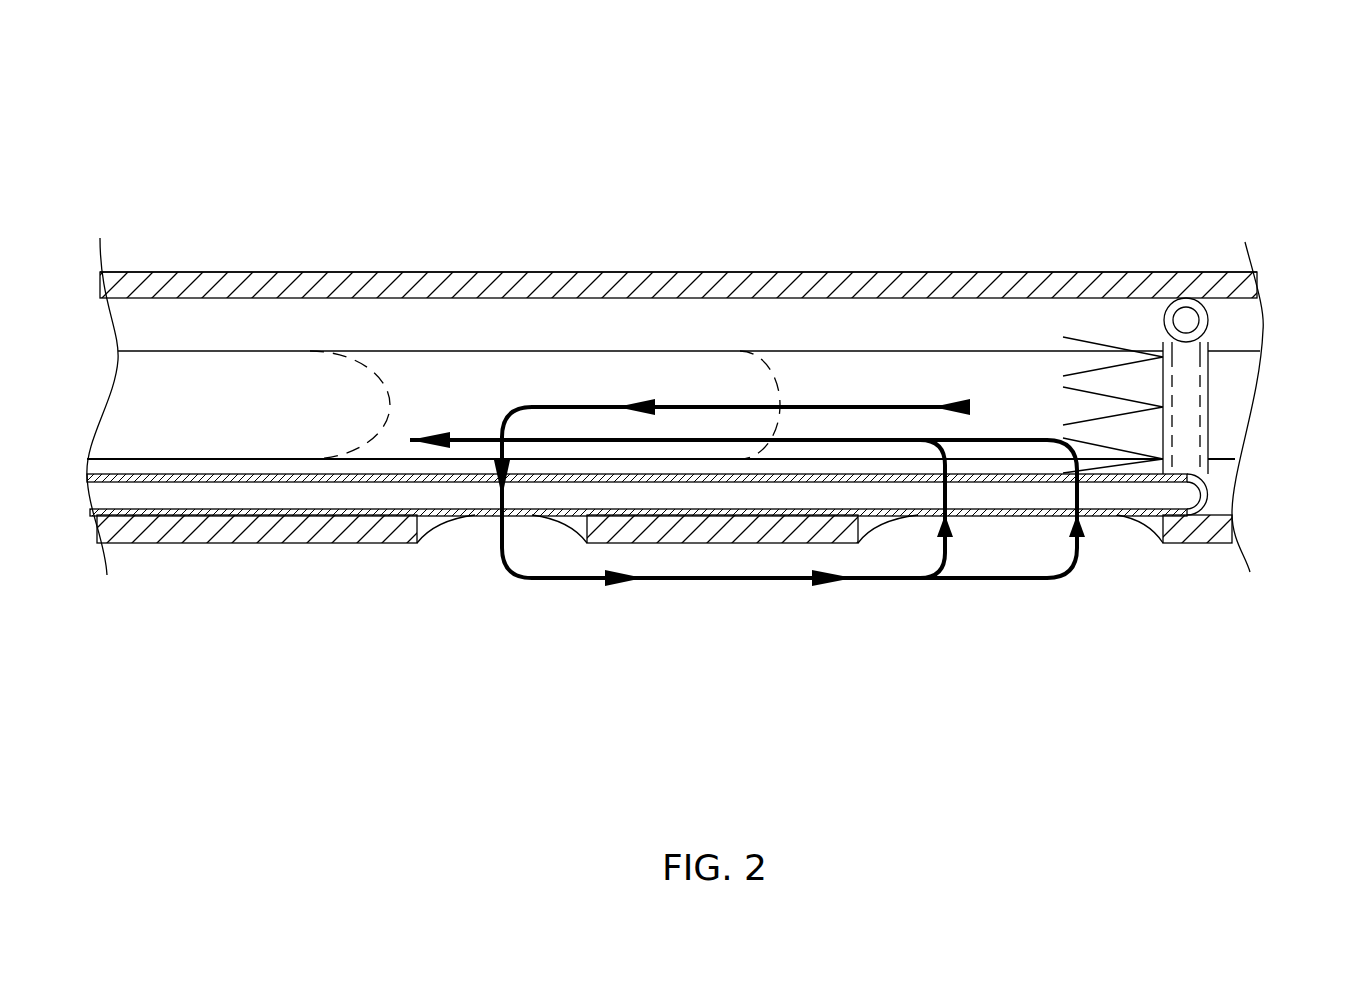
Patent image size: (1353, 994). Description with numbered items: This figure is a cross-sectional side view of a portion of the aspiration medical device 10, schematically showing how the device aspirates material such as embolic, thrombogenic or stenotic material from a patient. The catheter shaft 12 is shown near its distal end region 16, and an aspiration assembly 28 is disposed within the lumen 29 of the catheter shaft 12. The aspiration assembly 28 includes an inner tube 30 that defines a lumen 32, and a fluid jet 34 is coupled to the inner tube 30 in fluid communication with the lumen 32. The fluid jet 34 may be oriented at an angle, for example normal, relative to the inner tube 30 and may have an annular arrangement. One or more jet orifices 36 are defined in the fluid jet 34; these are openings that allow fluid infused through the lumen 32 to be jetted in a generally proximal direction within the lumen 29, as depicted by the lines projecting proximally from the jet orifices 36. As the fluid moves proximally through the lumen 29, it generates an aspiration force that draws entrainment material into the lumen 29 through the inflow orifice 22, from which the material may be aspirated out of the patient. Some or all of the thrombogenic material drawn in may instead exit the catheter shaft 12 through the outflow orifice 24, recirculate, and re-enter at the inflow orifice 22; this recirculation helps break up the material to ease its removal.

The aspiration medical device 10 is at (808, 132).
The catheter shaft 12 is at (392, 265).
The distal end region 16 is at (683, 272).
The inflow orifice 22 is at (1017, 532).
The outflow orifice 24 is at (482, 552).
The aspiration assembly 28 is at (277, 467).
The lumen 29 is at (255, 320).
The inner tube 30 is at (247, 513).
The lumen 32 is at (688, 493).
The fluid jet 34 is at (1163, 320).
The jet orifices 36 is at (1163, 357).